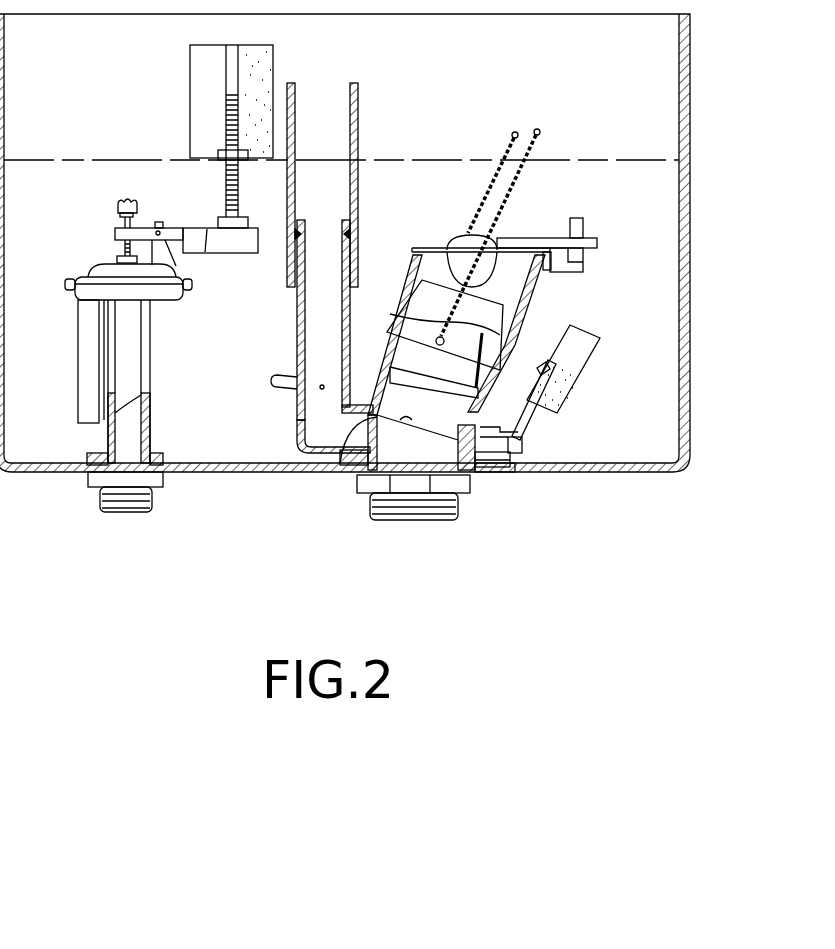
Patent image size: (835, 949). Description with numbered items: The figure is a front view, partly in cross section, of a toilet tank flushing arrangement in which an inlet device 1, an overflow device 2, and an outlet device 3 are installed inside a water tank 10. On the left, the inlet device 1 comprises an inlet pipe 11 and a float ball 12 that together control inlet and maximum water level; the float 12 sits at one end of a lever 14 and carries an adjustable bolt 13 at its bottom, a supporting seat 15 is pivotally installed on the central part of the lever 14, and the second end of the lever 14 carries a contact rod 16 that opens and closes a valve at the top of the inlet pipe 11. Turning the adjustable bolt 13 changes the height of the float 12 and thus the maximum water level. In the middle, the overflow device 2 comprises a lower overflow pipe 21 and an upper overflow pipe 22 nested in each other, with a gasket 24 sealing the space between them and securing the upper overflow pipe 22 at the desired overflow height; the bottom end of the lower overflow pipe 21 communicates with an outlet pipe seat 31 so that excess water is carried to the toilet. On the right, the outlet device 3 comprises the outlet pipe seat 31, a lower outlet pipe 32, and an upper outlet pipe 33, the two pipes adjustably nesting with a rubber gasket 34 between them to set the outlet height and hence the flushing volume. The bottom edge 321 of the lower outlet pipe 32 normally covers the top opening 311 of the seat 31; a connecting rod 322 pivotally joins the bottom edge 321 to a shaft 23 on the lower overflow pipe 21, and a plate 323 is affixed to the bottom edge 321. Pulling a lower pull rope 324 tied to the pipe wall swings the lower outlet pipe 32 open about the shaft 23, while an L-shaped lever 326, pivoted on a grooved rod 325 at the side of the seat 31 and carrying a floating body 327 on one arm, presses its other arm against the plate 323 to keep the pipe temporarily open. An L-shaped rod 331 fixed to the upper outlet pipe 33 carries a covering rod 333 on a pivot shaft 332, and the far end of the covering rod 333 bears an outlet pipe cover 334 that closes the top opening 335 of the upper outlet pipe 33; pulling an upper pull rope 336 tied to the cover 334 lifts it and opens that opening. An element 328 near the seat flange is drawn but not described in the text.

The inlet device 1 is at (88, 186).
The water tank 10 is at (690, 200).
The inlet pipe 11 is at (105, 430).
The float ball 12 is at (190, 100).
The adjustable bolt 13 is at (240, 190).
The lever 14 is at (250, 238).
The supporting seat 15 is at (175, 250).
The contact rod 16 is at (122, 243).
The overflow device 2 is at (377, 95).
The lower overflow pipe 21 is at (350, 322).
The upper overflow pipe 22 is at (360, 133).
The shaft 23 is at (308, 405).
The gasket 24 is at (358, 236).
The connecting rod 322 is at (275, 383).
The outlet device 3 is at (488, 147).
The outlet pipe seat 31 is at (456, 515).
The top opening 311 is at (357, 423).
The lower outlet pipe 32 is at (480, 410).
The bottom edge 321 is at (365, 413).
The plate 323 is at (470, 470).
The grooved rod 325 is at (508, 477).
The L-shaped lever 326 is at (528, 430).
The floating body 327 is at (575, 396).
The washer 328 is at (515, 473).
The upper outlet pipe 33 is at (410, 278).
The rubber gasket 34 is at (406, 294).
The L-shaped rod 331 is at (556, 262).
The pivot shaft 332 is at (578, 248).
The covering rod 333 is at (538, 244).
The outlet pipe cover 334 is at (452, 243).
The top opening 335 is at (443, 246).
The upper pull rope 336 is at (492, 230).
The lower pull rope 324 is at (527, 185).